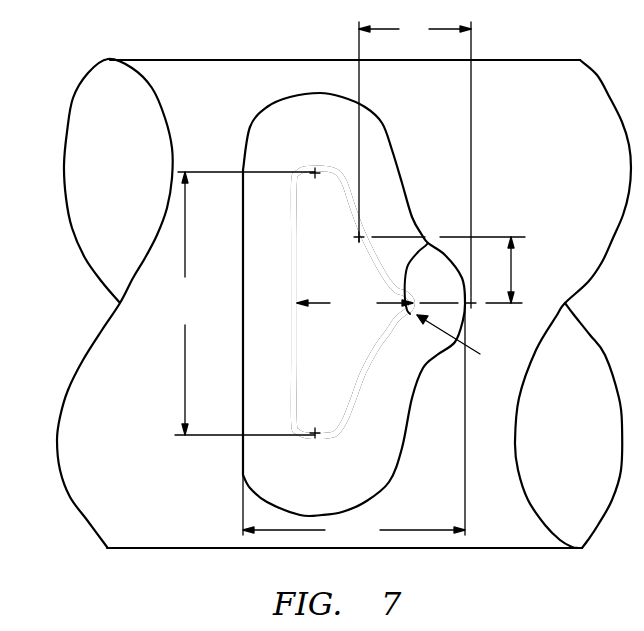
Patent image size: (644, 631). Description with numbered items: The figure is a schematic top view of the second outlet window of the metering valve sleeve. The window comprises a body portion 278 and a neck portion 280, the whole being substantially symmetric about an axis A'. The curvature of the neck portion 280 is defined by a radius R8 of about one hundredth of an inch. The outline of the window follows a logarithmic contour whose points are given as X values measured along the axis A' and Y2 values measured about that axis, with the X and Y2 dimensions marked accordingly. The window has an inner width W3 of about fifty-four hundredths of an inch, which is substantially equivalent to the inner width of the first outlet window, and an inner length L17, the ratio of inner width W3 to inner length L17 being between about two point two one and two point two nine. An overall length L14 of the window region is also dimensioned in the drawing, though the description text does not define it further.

The body portion 278 is at (310, 361).
The neck portion 280 is at (428, 243).
The X values X is at (415, 157).
The Y2 values Y2 is at (459, 270).
The inner length L17 is at (426, 303).
The inner width W3 is at (241, 303).
The dimension L14 is at (354, 420).
The radius R8 is at (464, 343).